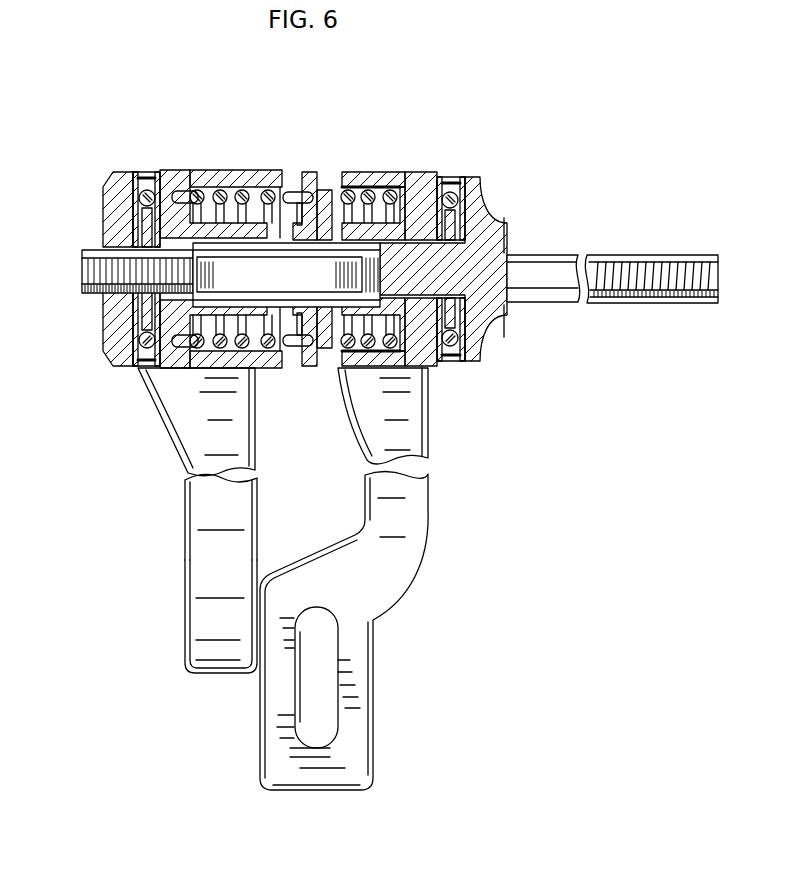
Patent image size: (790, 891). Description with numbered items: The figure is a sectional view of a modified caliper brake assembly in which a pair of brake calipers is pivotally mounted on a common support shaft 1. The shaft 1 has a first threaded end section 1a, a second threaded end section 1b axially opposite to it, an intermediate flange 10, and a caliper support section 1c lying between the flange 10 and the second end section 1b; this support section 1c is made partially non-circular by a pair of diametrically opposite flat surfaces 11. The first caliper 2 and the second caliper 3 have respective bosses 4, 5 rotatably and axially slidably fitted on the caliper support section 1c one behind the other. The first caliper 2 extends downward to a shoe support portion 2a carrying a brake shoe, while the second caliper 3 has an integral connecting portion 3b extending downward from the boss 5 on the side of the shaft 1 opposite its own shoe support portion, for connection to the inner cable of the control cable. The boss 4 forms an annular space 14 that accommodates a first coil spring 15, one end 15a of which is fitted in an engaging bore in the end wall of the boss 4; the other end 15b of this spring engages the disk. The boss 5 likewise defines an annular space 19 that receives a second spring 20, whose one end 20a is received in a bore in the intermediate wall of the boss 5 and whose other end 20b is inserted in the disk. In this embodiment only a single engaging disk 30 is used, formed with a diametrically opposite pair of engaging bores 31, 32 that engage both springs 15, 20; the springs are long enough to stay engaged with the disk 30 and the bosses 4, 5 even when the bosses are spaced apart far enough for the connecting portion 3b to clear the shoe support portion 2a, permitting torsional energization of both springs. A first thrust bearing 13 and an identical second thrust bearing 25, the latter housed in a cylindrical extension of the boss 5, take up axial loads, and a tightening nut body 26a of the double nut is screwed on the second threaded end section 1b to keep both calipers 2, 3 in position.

The support shaft 1 is at (553, 253).
The first threaded end section 1a is at (651, 256).
The second threaded end section 1b is at (90, 268).
The caliper support section 1c is at (507, 220).
The first caliper 2 is at (432, 505).
The shoe support portion 2a is at (363, 662).
The second caliper 3 is at (176, 452).
The connecting portion 3b is at (198, 583).
The boss 4 is at (421, 169).
The boss 5 is at (177, 168).
The intermediate flange 10 is at (501, 203).
The flat surfaces 11 is at (207, 381).
The first thrust bearing 13 is at (466, 186).
The annular space 14 is at (388, 172).
The first coil spring 15 is at (373, 176).
The spring end 15a is at (427, 382).
The lower retaining member portion 15b is at (332, 363).
The annular space 19 is at (226, 170).
The second spring 20 is at (248, 188).
The spring end 20a is at (191, 193).
The spring end 20b is at (294, 192).
The second thrust bearing 25 is at (143, 180).
The tightening nut body 26a is at (113, 172).
The engaging disk 30 is at (315, 172).
The engaging bore 31 is at (294, 362).
The engaging bore 32 is at (324, 200).